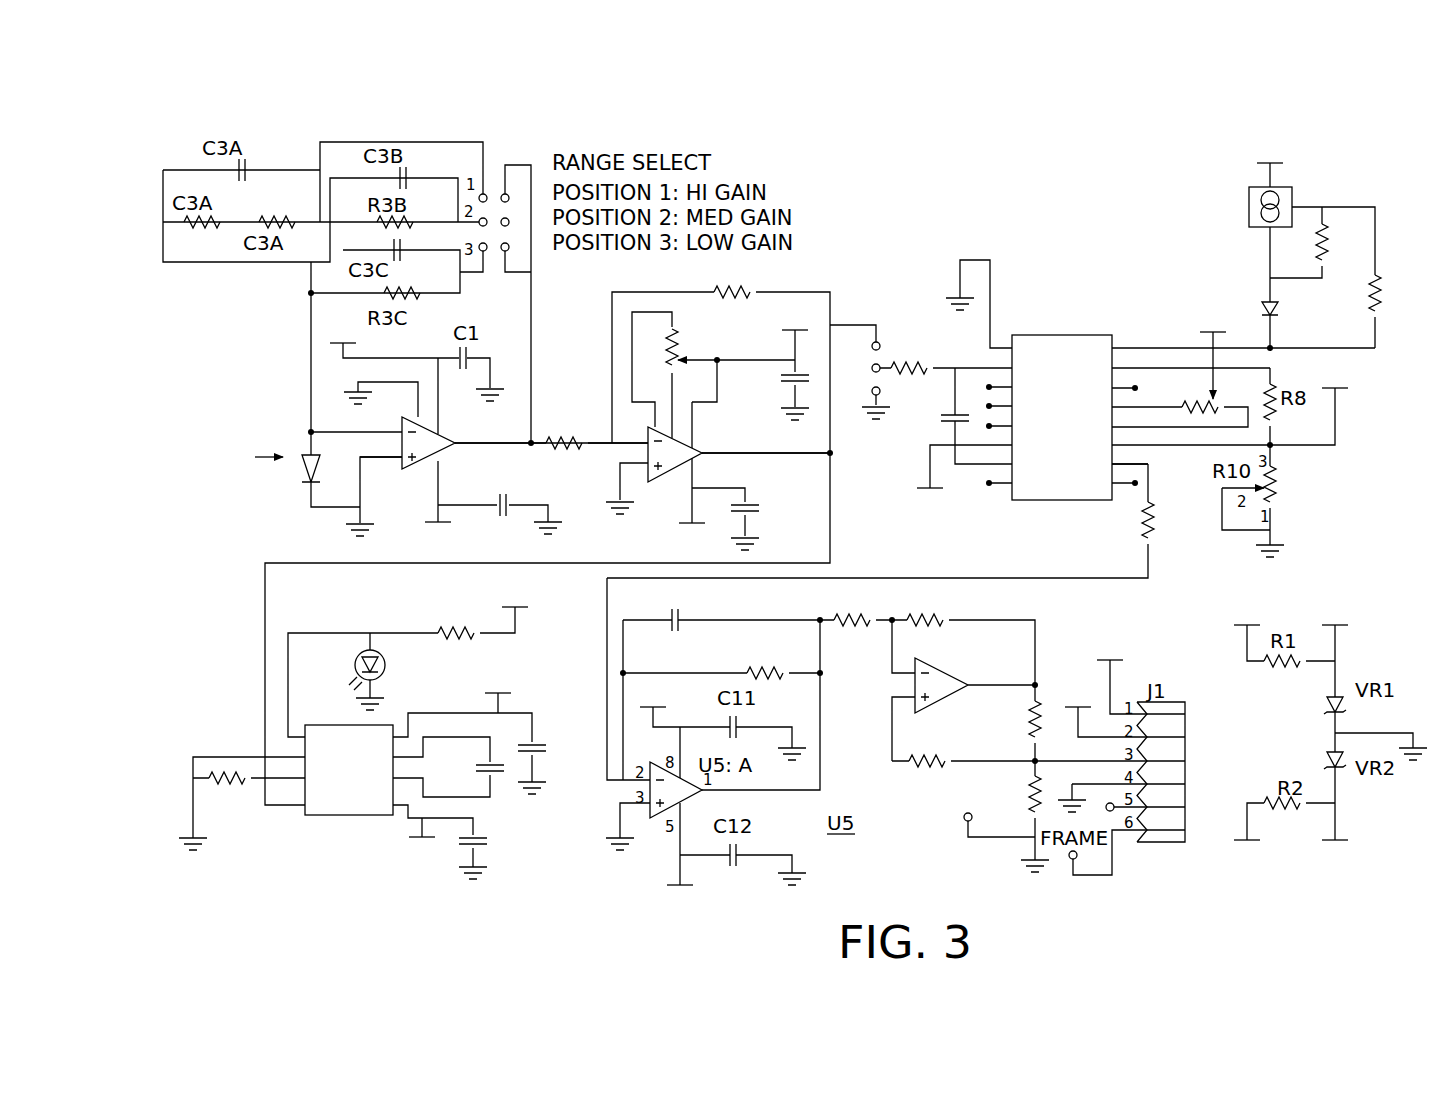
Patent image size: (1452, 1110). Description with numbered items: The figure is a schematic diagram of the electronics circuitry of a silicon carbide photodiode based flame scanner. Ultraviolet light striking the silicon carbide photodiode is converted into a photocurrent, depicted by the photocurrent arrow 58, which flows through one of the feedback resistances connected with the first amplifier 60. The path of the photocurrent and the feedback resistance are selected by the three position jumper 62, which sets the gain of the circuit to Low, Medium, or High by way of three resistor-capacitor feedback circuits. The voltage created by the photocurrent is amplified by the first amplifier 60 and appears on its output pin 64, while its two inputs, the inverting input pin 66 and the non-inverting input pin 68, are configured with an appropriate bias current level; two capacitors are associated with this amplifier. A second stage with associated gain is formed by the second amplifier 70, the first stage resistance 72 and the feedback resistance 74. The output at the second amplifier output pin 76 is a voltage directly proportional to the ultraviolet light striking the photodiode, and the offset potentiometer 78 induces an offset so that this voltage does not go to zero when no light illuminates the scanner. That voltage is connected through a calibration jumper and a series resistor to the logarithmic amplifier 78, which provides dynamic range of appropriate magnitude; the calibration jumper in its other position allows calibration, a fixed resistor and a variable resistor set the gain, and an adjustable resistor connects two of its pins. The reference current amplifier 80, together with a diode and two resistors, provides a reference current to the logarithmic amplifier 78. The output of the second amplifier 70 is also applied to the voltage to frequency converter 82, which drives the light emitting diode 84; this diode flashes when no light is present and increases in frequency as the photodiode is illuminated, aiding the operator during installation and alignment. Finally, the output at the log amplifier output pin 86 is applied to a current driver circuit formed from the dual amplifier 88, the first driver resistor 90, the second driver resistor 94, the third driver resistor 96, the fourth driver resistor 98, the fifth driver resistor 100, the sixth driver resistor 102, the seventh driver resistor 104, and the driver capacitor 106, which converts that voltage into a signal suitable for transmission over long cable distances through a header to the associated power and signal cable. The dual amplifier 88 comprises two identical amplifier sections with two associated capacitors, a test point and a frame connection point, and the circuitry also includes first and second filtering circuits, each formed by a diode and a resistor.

The photocurrent arrow 58 is at (255, 453).
The amplifier U1 60 is at (430, 449).
The jumper JP1 62 is at (533, 163).
The pin 6 of amplifier U1 64 is at (466, 443).
The pin 2 of amplifier U1 66 is at (392, 430).
The pin 3 of amplifier U1 68 is at (399, 463).
The amplifier U2 70 is at (668, 462).
The resistance R4 72 is at (563, 456).
The resistance R5 74 is at (745, 292).
The pin 6 of amplifier U2 76 is at (703, 455).
The logarithmic amplifier U3 78 is at (683, 349).
The amplifier U6 80 is at (1246, 192).
The voltage to frequency converter U4 82 is at (385, 722).
The light emitting diode D1 84 is at (362, 649).
The pin 10 of logarithmic amplifier U3 86 is at (1118, 464).
The amplifier U5 88 is at (937, 666).
The resistor R13 90 is at (1147, 532).
The resistor R15 94 is at (784, 672).
The resistor R16 96 is at (876, 617).
The resistor R17 98 is at (945, 619).
The resistor R18 100 is at (1040, 702).
The resistor R19 102 is at (1033, 793).
The resistor R20 104 is at (938, 762).
The capacitor C10 106 is at (682, 615).